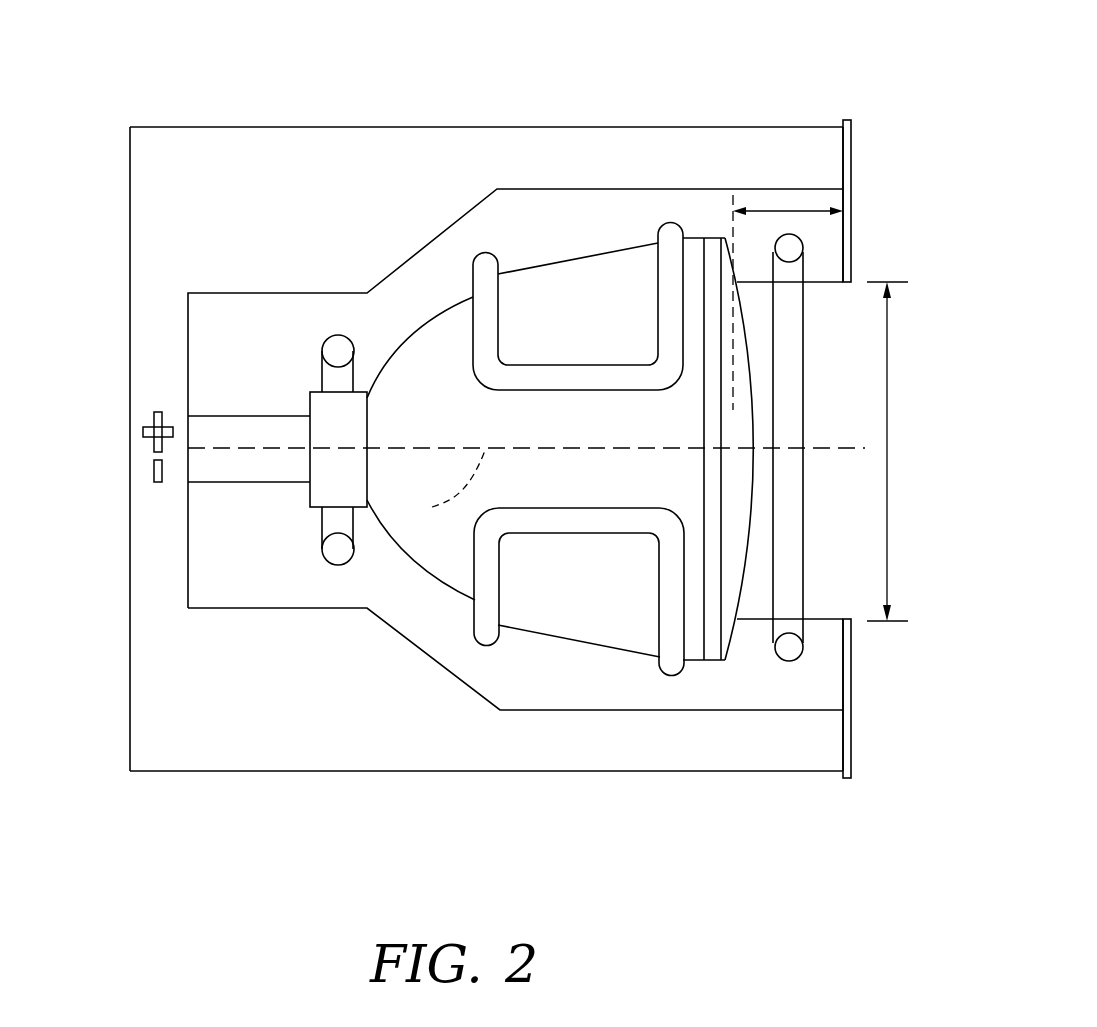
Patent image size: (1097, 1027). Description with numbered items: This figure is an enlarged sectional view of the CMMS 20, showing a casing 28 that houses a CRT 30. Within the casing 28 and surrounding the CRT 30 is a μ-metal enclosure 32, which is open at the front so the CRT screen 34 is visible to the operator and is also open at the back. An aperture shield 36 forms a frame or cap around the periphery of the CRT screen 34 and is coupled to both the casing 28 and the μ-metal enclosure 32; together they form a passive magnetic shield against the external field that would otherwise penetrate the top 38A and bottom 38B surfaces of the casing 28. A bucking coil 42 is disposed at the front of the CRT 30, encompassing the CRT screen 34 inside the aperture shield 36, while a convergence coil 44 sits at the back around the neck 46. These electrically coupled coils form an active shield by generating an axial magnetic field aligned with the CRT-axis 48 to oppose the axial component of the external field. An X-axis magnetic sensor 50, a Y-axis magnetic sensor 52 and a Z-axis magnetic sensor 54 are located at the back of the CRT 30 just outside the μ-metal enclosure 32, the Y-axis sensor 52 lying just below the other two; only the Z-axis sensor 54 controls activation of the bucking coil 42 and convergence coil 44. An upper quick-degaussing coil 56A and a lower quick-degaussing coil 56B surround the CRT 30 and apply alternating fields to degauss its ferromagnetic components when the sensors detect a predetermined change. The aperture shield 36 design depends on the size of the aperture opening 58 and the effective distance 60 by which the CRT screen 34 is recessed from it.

The CMMS 20 is at (733, 88).
The casing 28 is at (183, 127).
The CRT 30 is at (417, 560).
The μ-metal enclosure 32 is at (547, 189).
The CRT screen 34 is at (730, 622).
The aperture shield 36 is at (852, 200).
The top surface 38A is at (333, 127).
The bottom surface 38B is at (568, 771).
The bucking coil 42 is at (792, 652).
The convergence coil 44 is at (330, 343).
The neck 46 is at (372, 370).
The CRT-axis 48 is at (442, 484).
The X-axis magnetic sensor 50 is at (143, 433).
The Y-axis magnetic sensor 52 is at (153, 472).
The Z-axis magnetic sensor 54 is at (153, 412).
The upper quick-degaussing coil 56A is at (575, 365).
The lower quick-degaussing coil 56B is at (490, 633).
The aperture opening 58 is at (888, 462).
The effective distance 60 is at (787, 210).